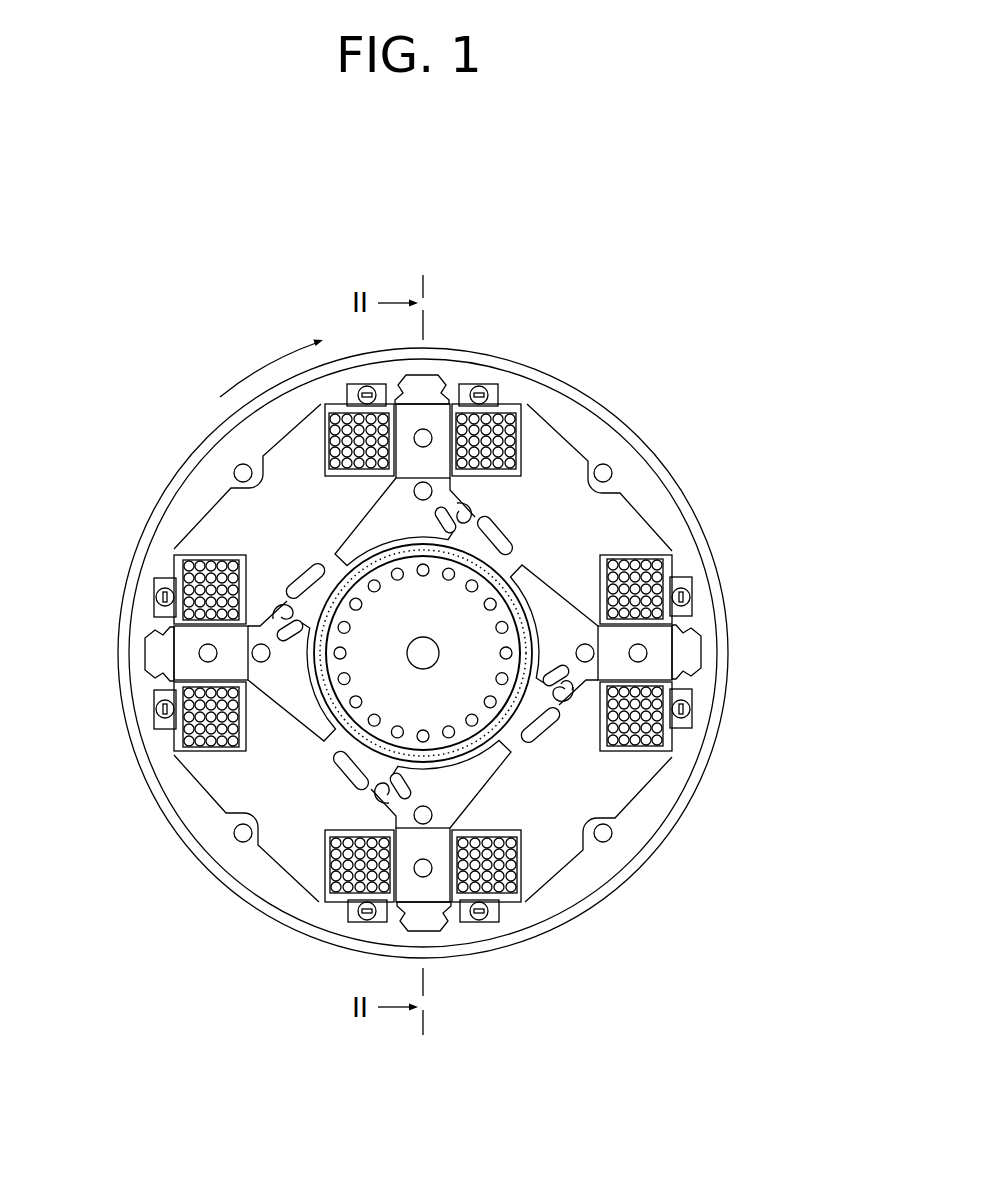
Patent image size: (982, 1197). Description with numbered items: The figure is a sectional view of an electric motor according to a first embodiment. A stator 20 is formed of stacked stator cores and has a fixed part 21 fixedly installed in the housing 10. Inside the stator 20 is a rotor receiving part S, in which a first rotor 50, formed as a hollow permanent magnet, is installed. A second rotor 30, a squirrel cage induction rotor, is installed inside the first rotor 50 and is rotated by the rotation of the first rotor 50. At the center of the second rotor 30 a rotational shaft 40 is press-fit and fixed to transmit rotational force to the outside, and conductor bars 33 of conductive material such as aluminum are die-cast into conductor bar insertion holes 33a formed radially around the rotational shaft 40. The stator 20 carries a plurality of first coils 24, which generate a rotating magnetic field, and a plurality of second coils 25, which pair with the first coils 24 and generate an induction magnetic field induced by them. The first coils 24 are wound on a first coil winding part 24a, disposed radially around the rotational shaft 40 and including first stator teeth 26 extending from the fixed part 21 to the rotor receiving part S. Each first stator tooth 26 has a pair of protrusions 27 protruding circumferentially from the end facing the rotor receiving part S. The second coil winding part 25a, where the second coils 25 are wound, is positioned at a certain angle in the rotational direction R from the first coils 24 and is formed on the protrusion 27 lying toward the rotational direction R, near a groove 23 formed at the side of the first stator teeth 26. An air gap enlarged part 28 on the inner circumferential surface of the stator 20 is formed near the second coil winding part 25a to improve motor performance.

The housing 10 is at (618, 383).
The stator 20 is at (644, 488).
The fixed part 21 is at (557, 410).
The groove 23 is at (530, 700).
The first coils 24 is at (655, 568).
The first coil winding part 24a is at (662, 656).
The second coils 25 is at (566, 741).
The second coil winding part 25a is at (568, 688).
The first stator teeth 26 is at (587, 600).
The protrusions 27 is at (553, 683).
The air gap enlarged part 28 is at (325, 590).
The second rotor 30 is at (365, 682).
The conductor bars 33 is at (273, 612).
The conductor bar insertion holes 33a is at (320, 570).
The rotational shaft 40 is at (423, 665).
The first rotor 50 is at (514, 749).
The rotor receiving part S is at (472, 512).
The rotational direction R is at (271, 366).